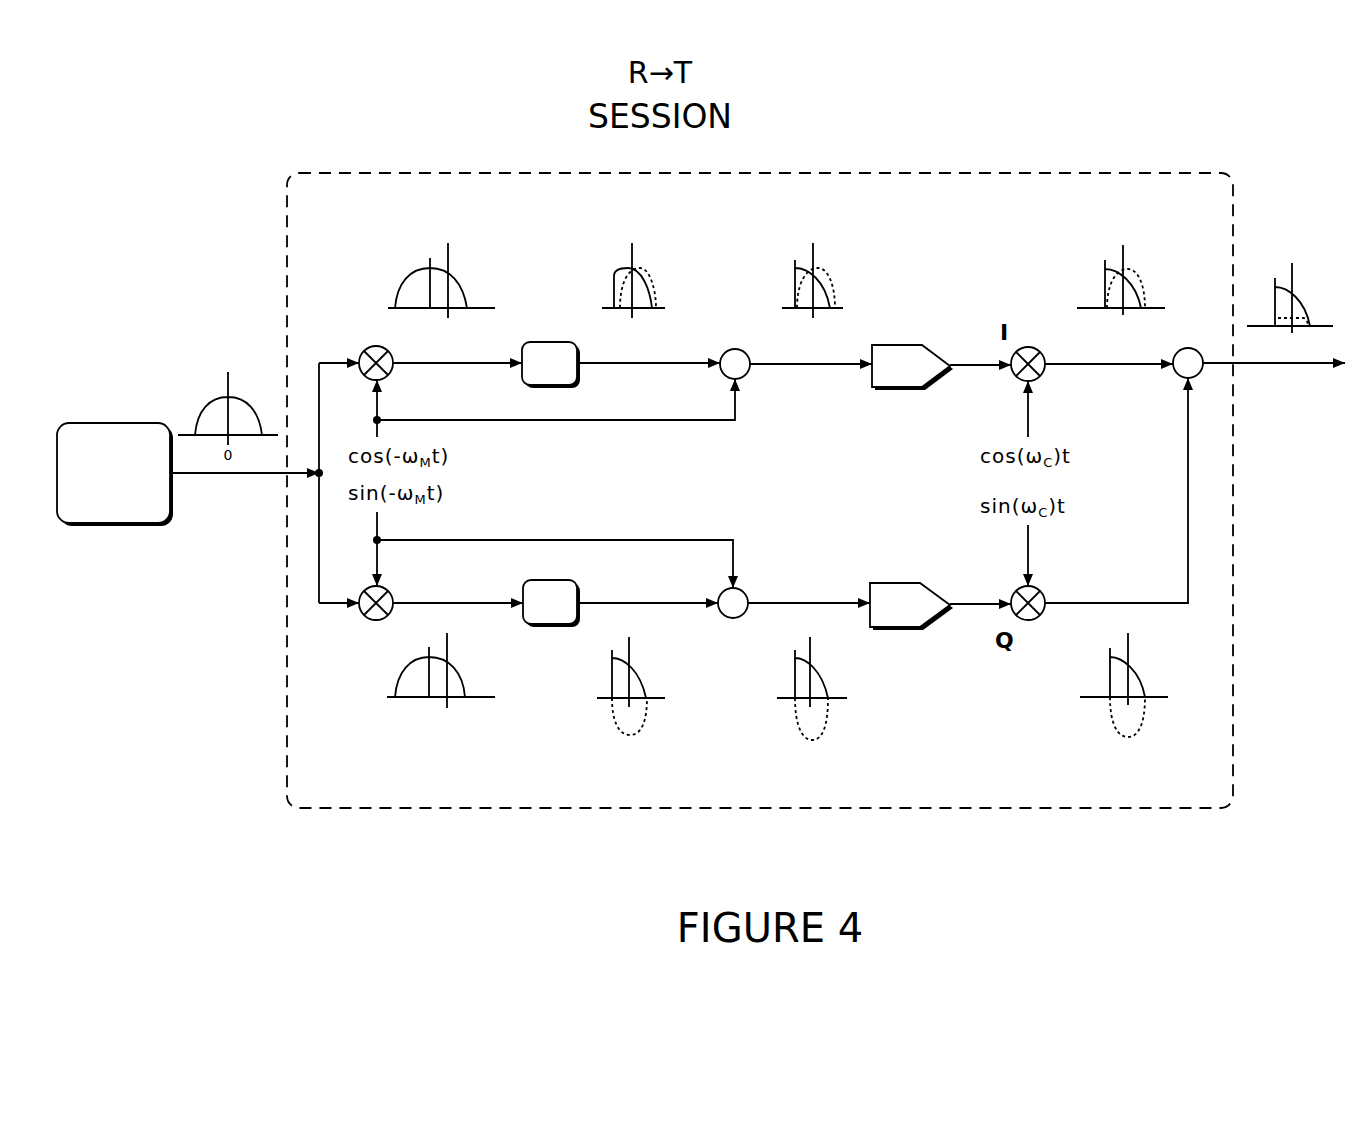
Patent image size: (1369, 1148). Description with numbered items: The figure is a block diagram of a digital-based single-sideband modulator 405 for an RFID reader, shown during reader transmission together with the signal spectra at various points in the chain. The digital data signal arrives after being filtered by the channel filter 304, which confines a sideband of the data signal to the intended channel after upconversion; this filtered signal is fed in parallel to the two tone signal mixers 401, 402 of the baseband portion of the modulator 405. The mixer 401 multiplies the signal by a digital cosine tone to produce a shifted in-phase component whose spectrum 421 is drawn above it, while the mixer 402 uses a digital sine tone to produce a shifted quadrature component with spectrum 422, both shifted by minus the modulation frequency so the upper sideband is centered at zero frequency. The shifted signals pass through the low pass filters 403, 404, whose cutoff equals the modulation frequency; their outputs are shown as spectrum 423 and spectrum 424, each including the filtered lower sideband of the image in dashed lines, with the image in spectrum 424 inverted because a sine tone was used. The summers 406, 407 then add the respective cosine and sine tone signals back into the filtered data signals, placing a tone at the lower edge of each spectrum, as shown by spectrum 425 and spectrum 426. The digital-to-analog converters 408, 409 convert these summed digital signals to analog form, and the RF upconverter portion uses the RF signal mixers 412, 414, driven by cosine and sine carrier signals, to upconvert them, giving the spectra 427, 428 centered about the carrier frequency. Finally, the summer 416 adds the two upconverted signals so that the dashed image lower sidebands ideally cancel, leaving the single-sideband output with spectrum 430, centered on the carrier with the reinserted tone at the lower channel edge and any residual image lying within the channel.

The channel filter 304 is at (115, 474).
The tone signal mixer 401 is at (366, 351).
The tone signal mixer 402 is at (366, 616).
The low pass filter 403 is at (552, 342).
The low pass filter 404 is at (553, 625).
The SSB modulator 405 is at (290, 180).
The summer 406 is at (738, 349).
The summer 407 is at (732, 619).
The digital-to-analog converter 408 is at (888, 391).
The digital-to-analog converter 409 is at (893, 630).
The RF signal mixer 412 is at (1036, 348).
The RF signal mixer 414 is at (1028, 621).
The summer 416 is at (1175, 375).
The spectrum 421 is at (377, 250).
The spectrum 422 is at (383, 727).
The spectrum 423 is at (585, 250).
The spectrum 424 is at (575, 733).
The spectrum 425 is at (775, 251).
The spectrum 426 is at (776, 733).
The spectrum 427 is at (1072, 246).
The spectrum 428 is at (1071, 733).
The spectrum 430 is at (1300, 240).